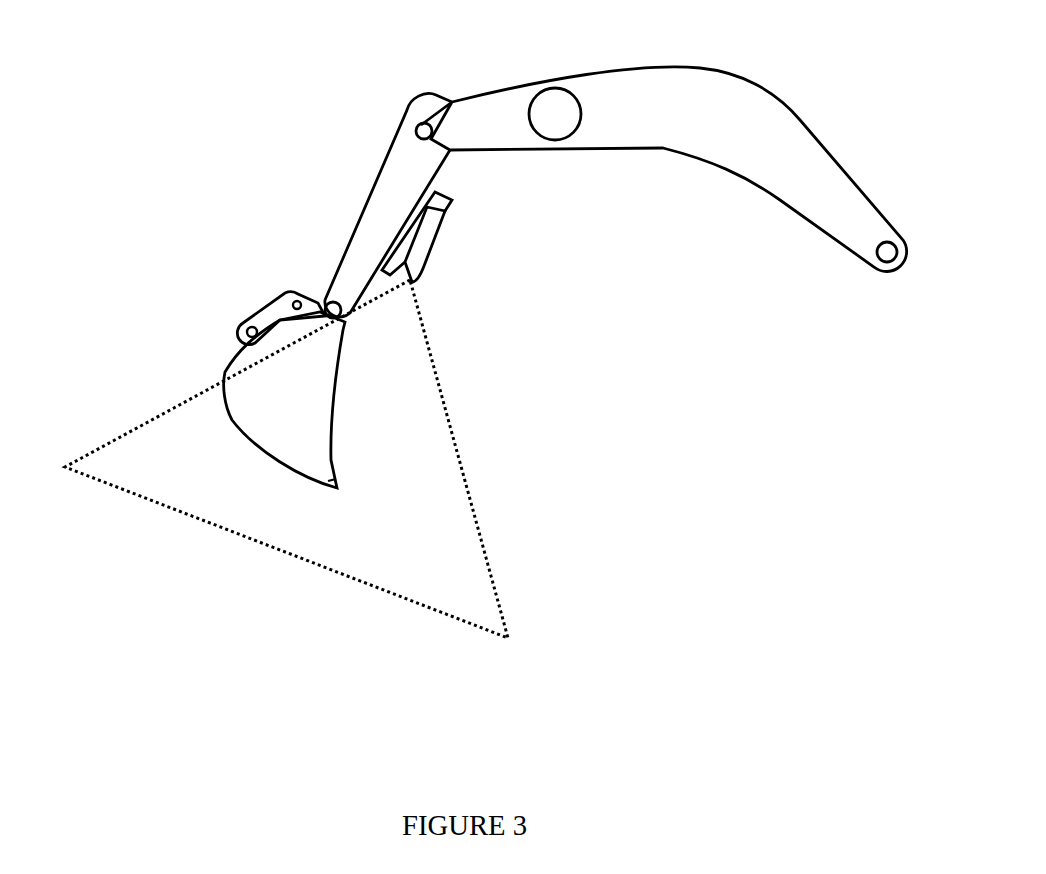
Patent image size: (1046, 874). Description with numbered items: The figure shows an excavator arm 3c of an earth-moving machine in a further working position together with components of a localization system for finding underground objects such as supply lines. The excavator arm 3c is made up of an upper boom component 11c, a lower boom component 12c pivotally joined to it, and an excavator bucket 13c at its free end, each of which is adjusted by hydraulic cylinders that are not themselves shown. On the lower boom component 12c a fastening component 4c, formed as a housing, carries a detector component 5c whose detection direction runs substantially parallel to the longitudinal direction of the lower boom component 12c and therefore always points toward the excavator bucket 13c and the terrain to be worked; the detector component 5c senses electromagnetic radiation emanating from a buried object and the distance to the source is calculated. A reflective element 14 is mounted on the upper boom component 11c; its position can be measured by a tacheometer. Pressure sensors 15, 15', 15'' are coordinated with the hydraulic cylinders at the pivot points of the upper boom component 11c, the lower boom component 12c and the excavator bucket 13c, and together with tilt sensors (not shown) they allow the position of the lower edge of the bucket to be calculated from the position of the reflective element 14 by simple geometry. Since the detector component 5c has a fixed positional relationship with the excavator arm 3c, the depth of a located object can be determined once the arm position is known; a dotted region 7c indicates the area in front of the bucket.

The excavator arm 3c is at (529, 275).
The upper boom component 11c is at (768, 128).
The lower boom component 12c is at (380, 207).
The excavator bucket 13c is at (233, 353).
The fastening component 4c is at (428, 213).
The detector component 5c is at (425, 263).
The working range 7c is at (477, 505).
The reflective element 14 is at (565, 128).
The pressure sensor 15 is at (841, 279).
The pressure sensor 15' is at (368, 106).
The pressure sensor 15'' is at (304, 272).